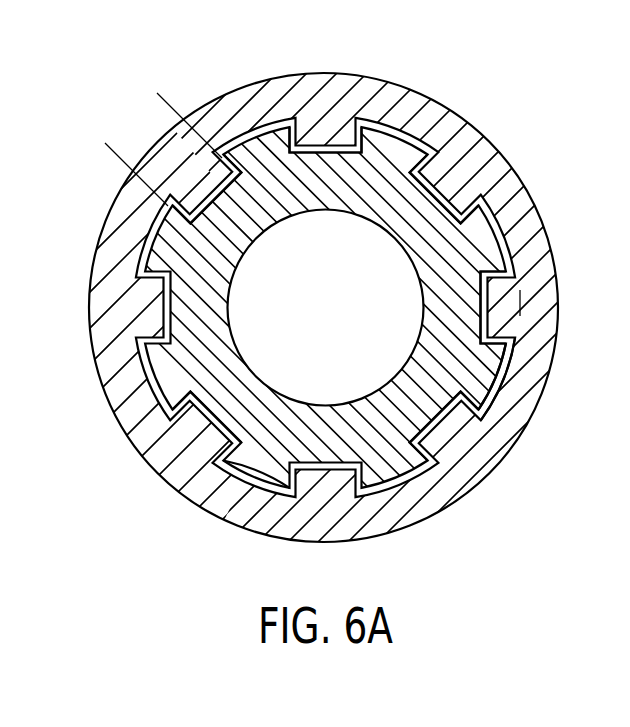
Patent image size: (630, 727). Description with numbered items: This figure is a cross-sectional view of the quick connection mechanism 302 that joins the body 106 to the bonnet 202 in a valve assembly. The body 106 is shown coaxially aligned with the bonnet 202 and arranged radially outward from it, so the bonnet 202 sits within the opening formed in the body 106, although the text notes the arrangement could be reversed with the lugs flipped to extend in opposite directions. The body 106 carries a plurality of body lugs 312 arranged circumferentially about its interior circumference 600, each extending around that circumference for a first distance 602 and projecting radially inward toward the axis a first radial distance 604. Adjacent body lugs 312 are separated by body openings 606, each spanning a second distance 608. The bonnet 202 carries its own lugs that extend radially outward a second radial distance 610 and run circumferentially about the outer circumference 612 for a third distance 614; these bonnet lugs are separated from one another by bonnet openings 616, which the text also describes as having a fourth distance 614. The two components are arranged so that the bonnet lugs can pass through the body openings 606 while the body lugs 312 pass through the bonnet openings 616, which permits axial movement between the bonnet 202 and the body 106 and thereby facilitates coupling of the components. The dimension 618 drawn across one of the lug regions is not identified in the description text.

The quick connection mechanism 302 is at (494, 70).
The body 106 is at (497, 118).
The body lugs 312 is at (490, 145).
The bonnet 202 is at (315, 363).
The interior circumference 600 is at (568, 364).
The first distance 602 is at (466, 421).
The first radial distance 604 is at (452, 304).
The body openings 606 is at (530, 388).
The second distance 608 is at (533, 340).
The second radial distance 610 is at (505, 230).
The outer circumference 612 is at (237, 460).
The third distance 614 is at (214, 517).
The bonnet openings 616 is at (323, 160).
The key width 618 is at (162, 106).